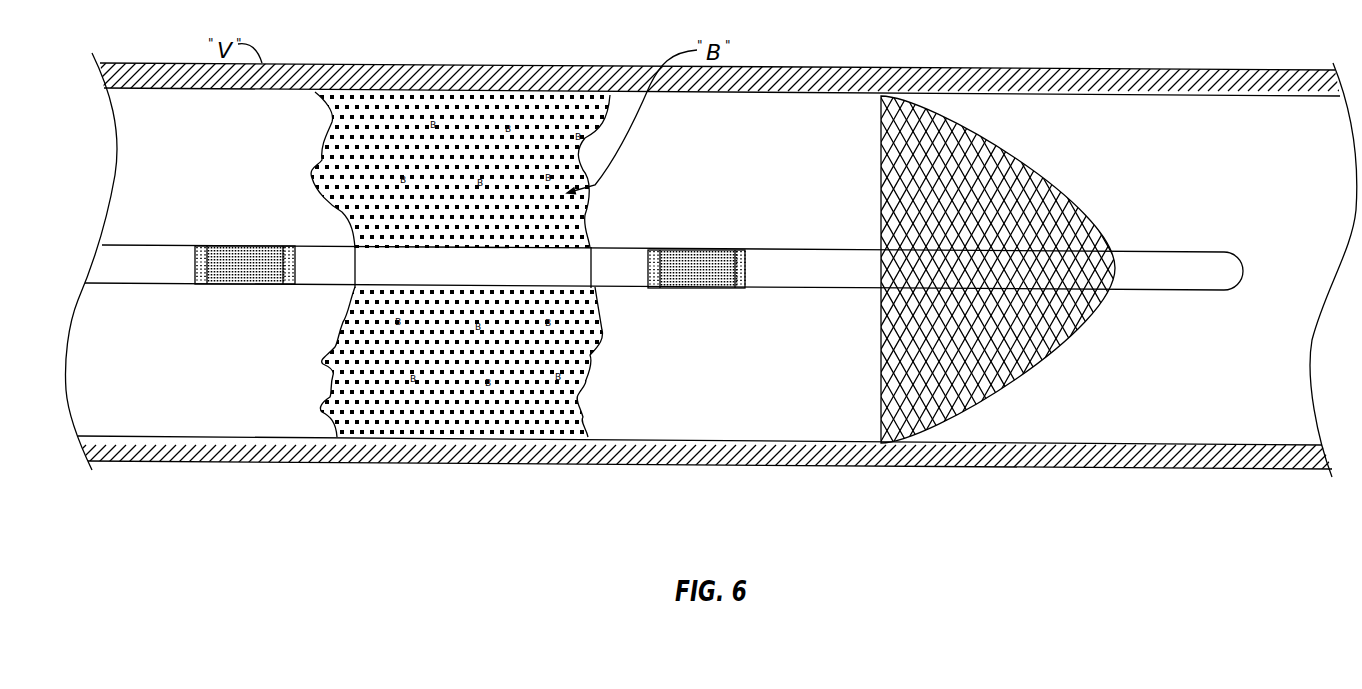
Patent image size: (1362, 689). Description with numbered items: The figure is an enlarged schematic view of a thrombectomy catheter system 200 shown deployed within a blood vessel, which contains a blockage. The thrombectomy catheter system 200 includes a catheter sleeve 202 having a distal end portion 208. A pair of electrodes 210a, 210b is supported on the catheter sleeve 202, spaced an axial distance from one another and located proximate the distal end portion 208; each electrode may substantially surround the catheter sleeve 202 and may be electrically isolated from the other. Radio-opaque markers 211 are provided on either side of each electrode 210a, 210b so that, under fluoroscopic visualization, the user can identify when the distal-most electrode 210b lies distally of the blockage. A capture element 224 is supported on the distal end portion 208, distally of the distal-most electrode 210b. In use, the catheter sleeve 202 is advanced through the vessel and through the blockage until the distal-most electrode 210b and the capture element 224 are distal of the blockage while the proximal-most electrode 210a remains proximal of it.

The thrombectomy catheter system 200 is at (125, 213).
The catheter sleeve 202 is at (140, 240).
The distal end portion 208 is at (860, 250).
The proximal-most electrode 210a is at (248, 246).
The distal-most electrode 210b is at (710, 251).
The radio-opaque markers 211 is at (193, 273).
The capture element 224 is at (1074, 204).